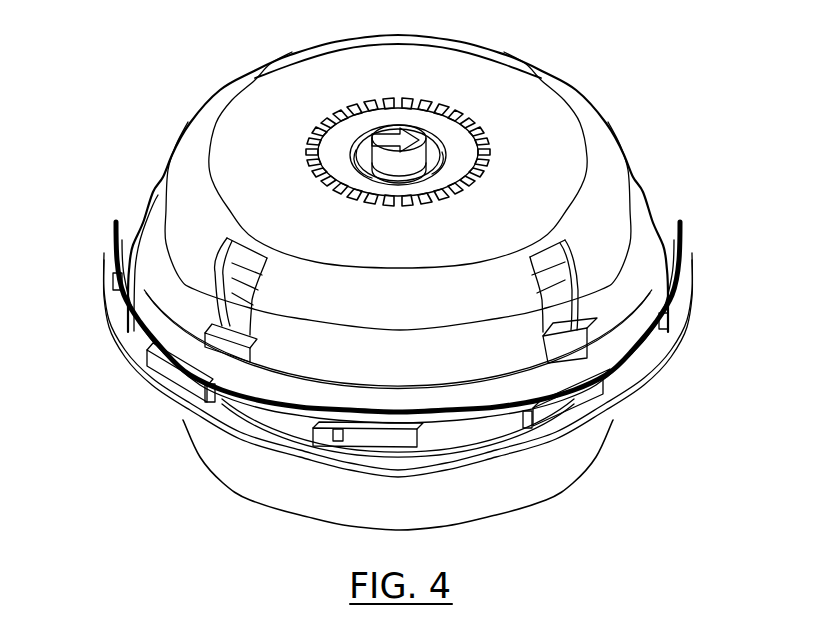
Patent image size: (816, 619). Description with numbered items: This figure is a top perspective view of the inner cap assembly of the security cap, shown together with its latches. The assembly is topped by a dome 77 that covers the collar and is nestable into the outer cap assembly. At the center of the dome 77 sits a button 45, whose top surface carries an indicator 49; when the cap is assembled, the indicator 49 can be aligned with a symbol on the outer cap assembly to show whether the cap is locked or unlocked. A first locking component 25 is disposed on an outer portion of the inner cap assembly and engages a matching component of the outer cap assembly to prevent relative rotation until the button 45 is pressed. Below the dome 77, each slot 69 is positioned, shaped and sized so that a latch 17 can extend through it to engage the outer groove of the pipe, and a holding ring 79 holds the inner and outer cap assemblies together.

The first locking component 25 is at (424, 84).
The button 45 is at (358, 132).
The indicator 49 is at (422, 128).
The dome 77 is at (552, 166).
The slot 69 is at (236, 301).
The latch 17 is at (595, 346).
The holding ring 79 is at (542, 478).